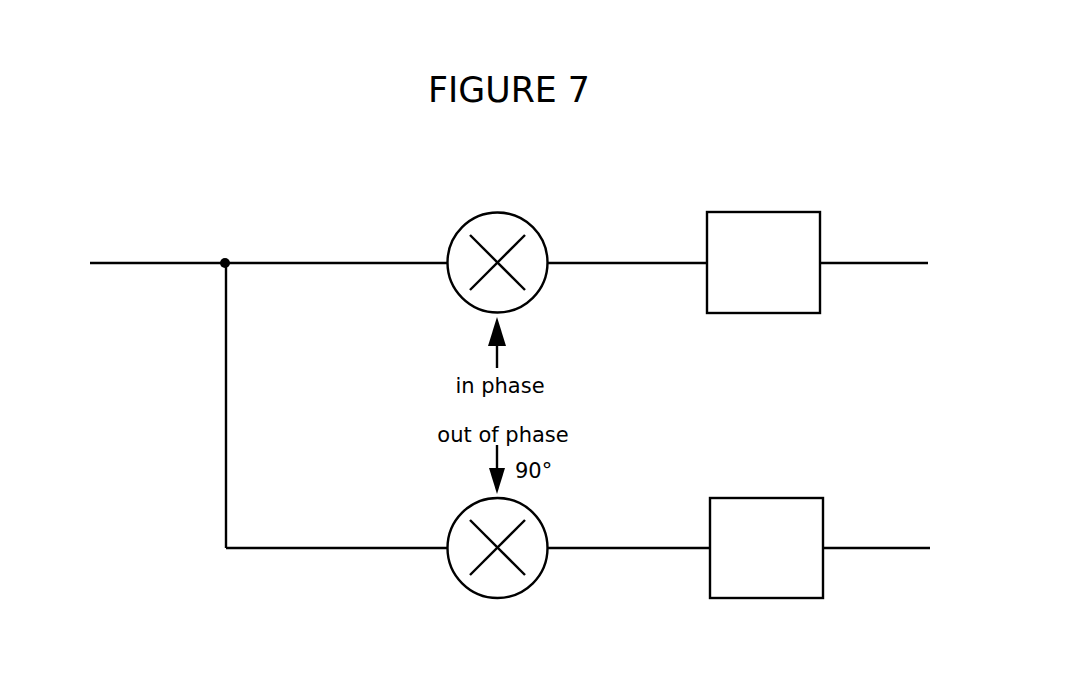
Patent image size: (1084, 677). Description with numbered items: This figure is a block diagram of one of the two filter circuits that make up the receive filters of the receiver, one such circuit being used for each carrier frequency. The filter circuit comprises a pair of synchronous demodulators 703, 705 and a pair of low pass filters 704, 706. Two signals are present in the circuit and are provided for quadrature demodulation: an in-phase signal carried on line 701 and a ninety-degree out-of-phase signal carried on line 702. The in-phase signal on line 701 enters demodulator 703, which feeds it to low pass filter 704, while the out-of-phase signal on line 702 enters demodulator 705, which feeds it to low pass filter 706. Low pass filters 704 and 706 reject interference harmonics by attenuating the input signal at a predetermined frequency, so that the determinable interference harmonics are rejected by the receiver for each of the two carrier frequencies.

The line 701 is at (268, 263).
The line 702 is at (268, 548).
The demodulator 703 is at (497, 210).
The low pass filter 704 is at (760, 212).
The demodulator 705 is at (497, 598).
The low pass filter 706 is at (764, 498).